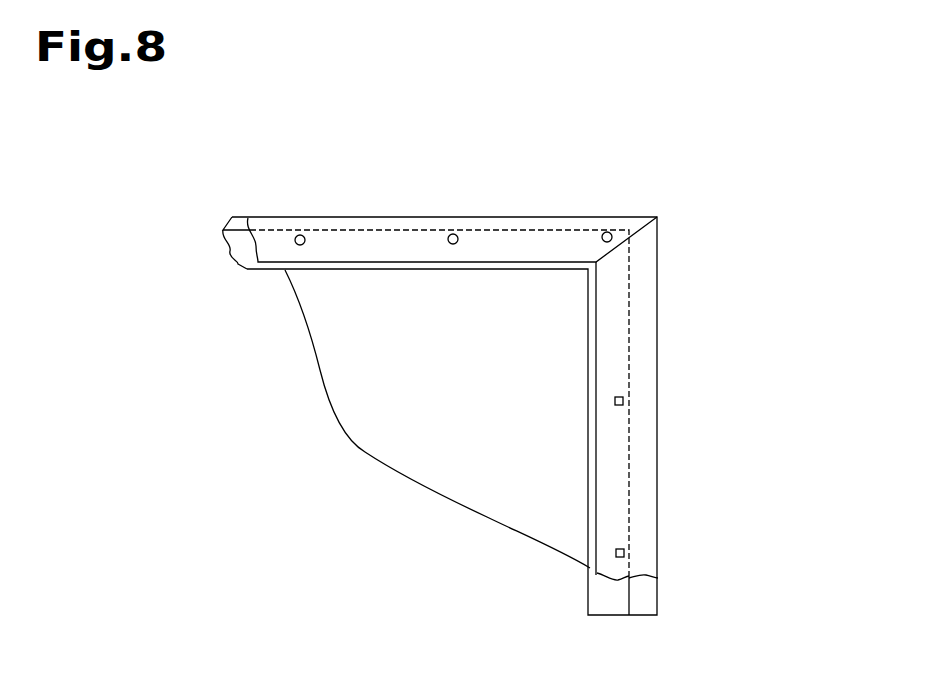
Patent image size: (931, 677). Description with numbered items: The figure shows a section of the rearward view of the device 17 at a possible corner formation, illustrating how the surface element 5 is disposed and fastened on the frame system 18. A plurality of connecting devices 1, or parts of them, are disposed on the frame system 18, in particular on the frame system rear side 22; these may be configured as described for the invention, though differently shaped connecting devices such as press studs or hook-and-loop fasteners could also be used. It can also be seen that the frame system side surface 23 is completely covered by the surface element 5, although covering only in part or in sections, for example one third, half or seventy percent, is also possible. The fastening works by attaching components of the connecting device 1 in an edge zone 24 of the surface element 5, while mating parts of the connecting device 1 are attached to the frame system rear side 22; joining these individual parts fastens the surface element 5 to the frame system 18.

The connecting device 1 is at (455, 233).
The surface element 5 is at (398, 385).
The device 17 is at (725, 158).
The frame system 18 is at (243, 278).
The frame system rear side 22 is at (605, 593).
The frame system side surface 23 is at (645, 318).
The edge zone 24 is at (287, 257).